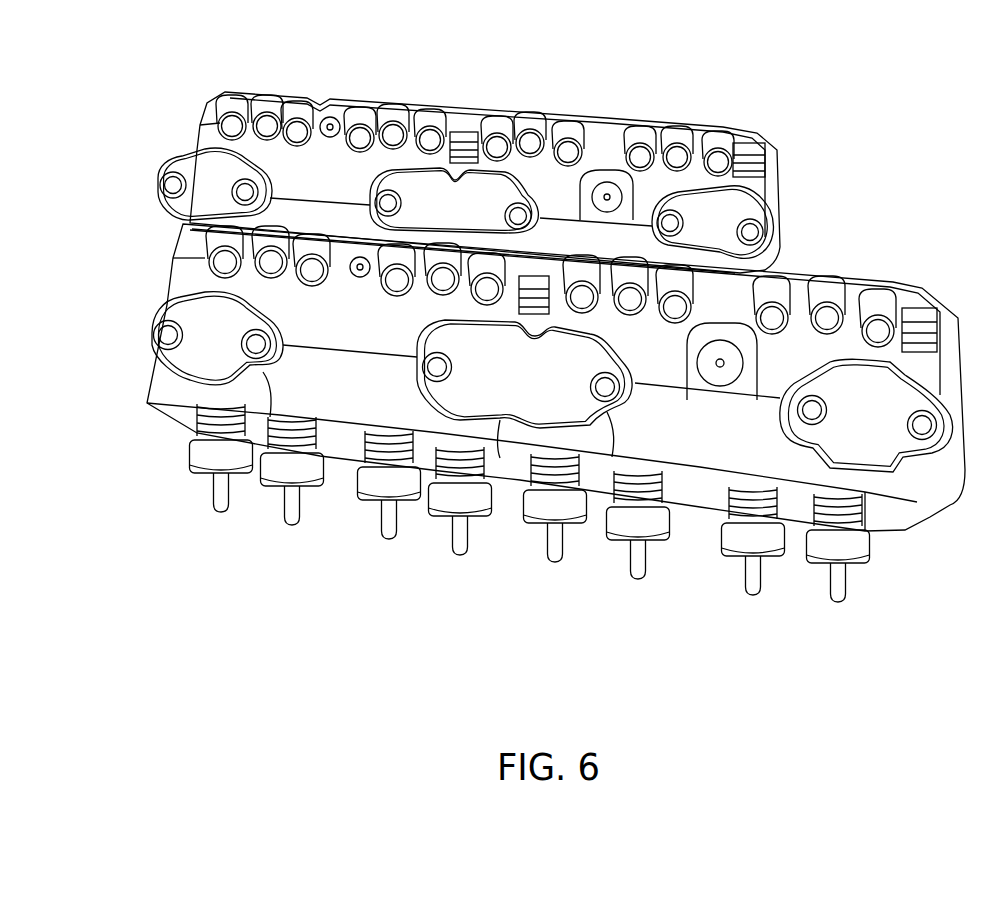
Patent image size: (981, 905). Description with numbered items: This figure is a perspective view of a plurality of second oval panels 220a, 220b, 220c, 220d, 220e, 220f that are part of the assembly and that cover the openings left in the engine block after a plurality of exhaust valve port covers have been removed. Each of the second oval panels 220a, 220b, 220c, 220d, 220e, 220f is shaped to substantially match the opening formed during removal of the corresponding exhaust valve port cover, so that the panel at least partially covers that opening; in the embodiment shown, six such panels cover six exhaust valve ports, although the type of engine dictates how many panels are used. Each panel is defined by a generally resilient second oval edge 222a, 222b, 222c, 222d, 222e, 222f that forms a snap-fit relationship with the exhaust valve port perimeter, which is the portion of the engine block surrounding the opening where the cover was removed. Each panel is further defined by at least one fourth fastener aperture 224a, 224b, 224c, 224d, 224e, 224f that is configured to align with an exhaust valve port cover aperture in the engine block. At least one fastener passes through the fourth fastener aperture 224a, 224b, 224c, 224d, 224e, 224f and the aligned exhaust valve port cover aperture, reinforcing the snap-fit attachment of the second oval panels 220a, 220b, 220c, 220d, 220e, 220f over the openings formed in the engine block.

The second oval panel 220a is at (215, 184).
The second oval panel 220b is at (454, 200).
The second oval panel 220c is at (712, 222).
The second oval panel 220d is at (217, 338).
The second oval panel 220e is at (524, 374).
The second oval panel 220f is at (866, 415).
The second oval edge 222a is at (210, 98).
The second oval edge 222b is at (457, 110).
The second oval edge 222c is at (745, 127).
The second oval edge 222d is at (150, 382).
The second oval edge 222e is at (507, 408).
The second oval edge 222f is at (827, 466).
The fourth fastener aperture 224a is at (165, 168).
The fourth fastener aperture 224b is at (380, 190).
The fourth fastener aperture 224c is at (660, 210).
The fourth fastener aperture 224d is at (260, 370).
The fourth fastener aperture 224e is at (606, 402).
The fourth fastener aperture 224f is at (926, 440).